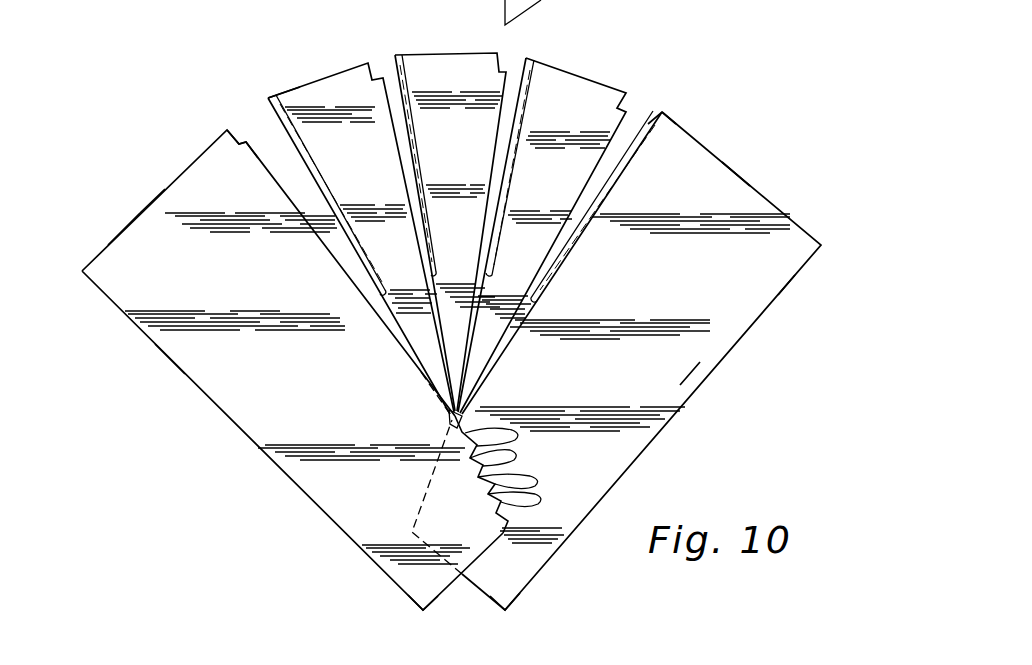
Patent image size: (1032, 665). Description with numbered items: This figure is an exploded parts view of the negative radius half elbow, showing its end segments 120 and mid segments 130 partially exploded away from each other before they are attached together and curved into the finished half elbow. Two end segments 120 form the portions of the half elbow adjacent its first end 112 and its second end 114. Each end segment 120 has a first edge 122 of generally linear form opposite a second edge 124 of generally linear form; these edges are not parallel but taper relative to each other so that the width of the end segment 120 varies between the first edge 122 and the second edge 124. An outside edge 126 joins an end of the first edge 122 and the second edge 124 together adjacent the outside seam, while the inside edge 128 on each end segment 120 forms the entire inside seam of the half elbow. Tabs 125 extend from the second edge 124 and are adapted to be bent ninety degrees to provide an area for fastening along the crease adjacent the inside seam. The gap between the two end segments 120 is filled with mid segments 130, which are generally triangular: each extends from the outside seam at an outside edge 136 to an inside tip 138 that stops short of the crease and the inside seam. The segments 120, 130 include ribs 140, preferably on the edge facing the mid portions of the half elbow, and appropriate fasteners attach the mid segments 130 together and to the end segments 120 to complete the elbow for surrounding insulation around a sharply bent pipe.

The first end 112 is at (721, 362).
The second end 114 is at (213, 404).
The end segment 120 is at (180, 345).
The first edge 122 is at (123, 312).
The second edge 124 is at (256, 152).
The tab 125 is at (522, 474).
The outside edge 126 is at (150, 203).
The inside edge 128 is at (438, 596).
The mid segment 130 is at (333, 86).
The outside edge 136 is at (291, 57).
The inside tip 138 is at (448, 412).
The rib 140 is at (320, 167).